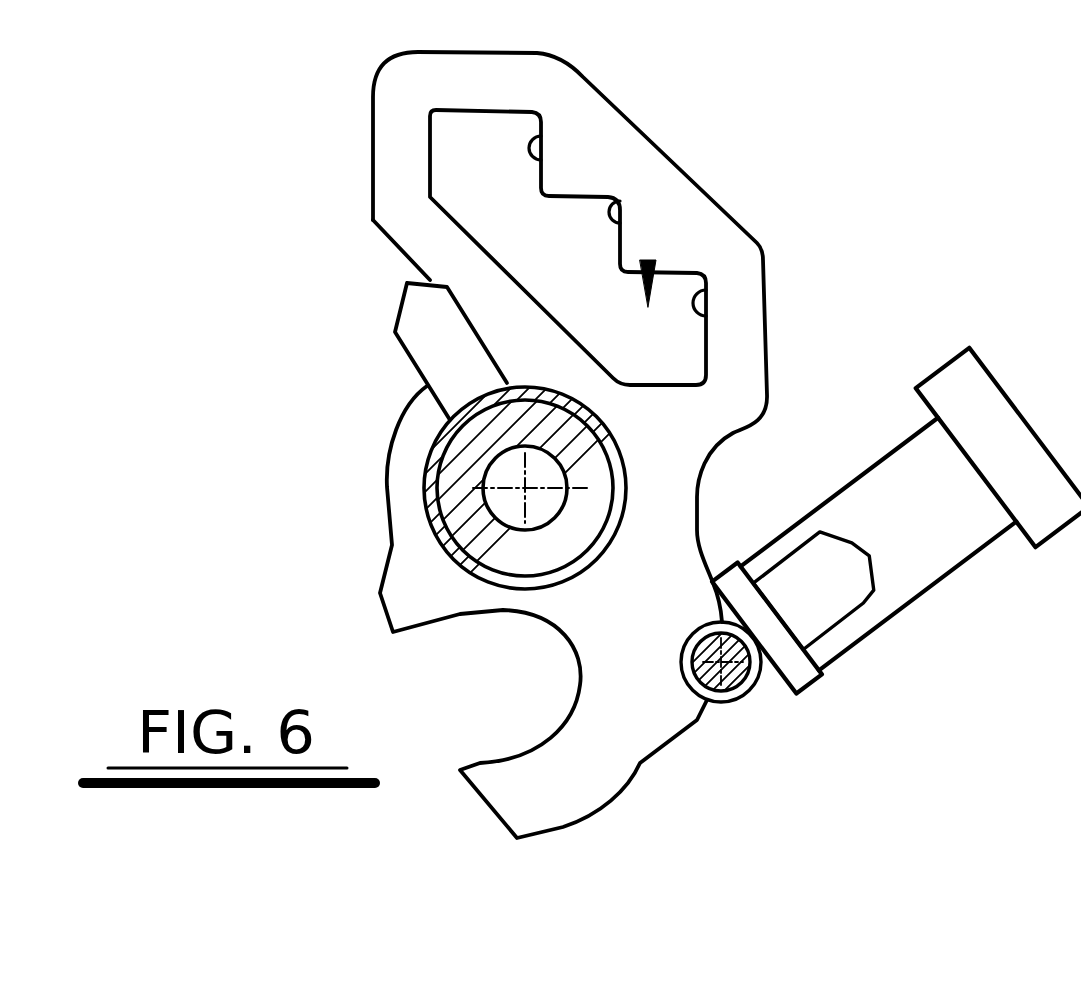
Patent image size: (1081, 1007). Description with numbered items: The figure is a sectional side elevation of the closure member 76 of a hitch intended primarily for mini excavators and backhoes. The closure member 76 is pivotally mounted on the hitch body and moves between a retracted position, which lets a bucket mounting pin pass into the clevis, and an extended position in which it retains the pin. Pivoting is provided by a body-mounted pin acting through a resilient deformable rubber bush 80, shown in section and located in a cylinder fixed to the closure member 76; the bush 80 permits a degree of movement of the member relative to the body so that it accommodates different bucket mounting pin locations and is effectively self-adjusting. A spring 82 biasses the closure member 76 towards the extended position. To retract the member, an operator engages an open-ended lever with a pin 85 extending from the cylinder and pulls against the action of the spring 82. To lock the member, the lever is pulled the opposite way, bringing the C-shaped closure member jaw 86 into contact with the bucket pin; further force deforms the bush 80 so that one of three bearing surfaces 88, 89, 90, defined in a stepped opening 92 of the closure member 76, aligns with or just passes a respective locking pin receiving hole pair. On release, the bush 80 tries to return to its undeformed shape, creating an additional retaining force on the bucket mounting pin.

The closure member 76 is at (660, 773).
The rubber bush 80 is at (430, 472).
The spring 82 is at (830, 637).
The pin 85 is at (412, 332).
The C-shaped closure member jaw 86 is at (548, 823).
The bearing surface 88 is at (542, 130).
The bearing surface 89 is at (602, 198).
The bearing surface 90 is at (707, 290).
The stepped opening 92 is at (650, 262).